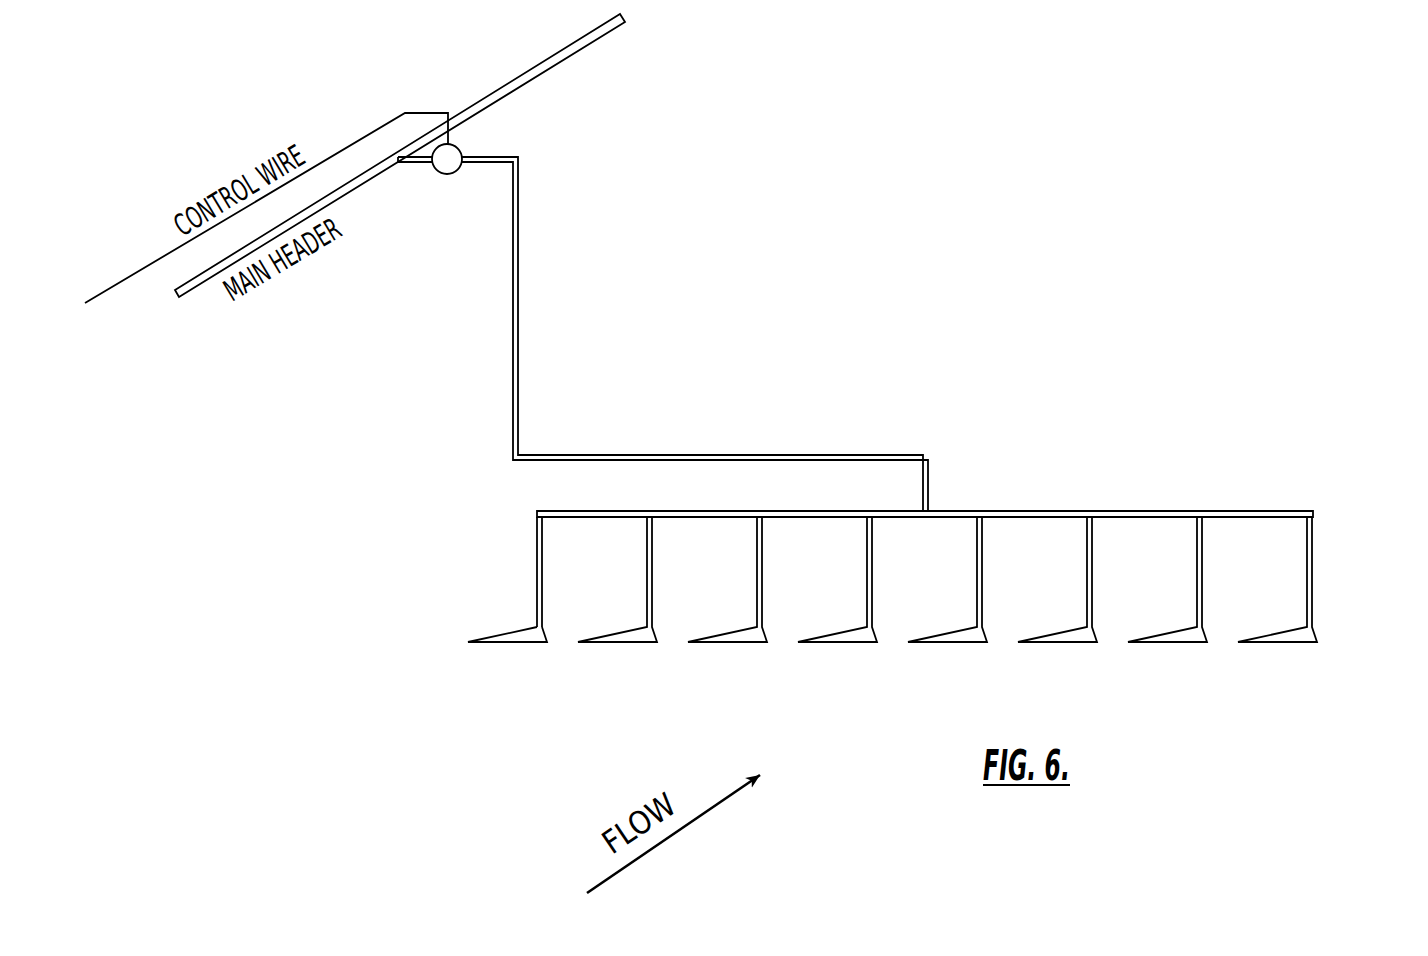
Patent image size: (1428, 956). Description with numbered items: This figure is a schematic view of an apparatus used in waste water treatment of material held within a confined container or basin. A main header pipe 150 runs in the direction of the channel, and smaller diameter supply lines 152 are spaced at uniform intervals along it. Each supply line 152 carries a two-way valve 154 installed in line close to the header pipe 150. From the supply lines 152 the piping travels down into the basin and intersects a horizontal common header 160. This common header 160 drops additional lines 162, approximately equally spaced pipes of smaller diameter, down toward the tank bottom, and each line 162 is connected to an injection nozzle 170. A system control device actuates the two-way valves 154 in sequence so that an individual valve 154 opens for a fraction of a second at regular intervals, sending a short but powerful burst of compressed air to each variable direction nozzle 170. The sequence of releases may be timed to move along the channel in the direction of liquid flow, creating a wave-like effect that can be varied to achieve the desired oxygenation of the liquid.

The main header pipe 150 is at (490, 103).
The supply line 152 is at (512, 347).
The two-way valve 154 is at (463, 146).
The common header 160 is at (1284, 510).
The line 162 is at (644, 538).
The injection nozzle 170 is at (494, 651).